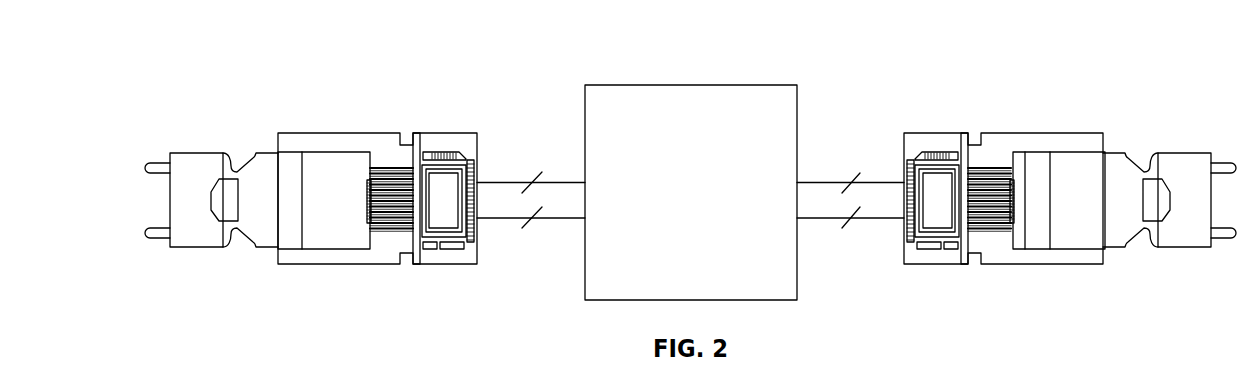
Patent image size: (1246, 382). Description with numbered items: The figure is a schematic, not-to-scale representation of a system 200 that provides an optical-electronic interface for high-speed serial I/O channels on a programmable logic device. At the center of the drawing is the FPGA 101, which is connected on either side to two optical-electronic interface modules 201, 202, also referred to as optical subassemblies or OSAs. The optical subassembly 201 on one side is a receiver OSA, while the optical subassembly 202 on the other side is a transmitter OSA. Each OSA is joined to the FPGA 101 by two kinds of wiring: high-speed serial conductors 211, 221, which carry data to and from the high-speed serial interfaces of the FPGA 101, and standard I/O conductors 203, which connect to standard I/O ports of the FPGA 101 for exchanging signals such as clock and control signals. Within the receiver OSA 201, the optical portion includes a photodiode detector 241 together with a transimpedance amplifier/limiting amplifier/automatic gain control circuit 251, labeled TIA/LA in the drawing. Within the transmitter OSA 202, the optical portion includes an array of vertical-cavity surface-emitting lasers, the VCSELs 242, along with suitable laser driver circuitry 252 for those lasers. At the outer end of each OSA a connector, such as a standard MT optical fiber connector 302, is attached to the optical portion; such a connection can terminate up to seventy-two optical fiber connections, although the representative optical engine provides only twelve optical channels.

The system 200 is at (190, 62).
The FPGA 101 is at (645, 84).
The optical-electronic interface module 201 is at (377, 200).
The optical-electronic interface module 202 is at (1007, 198).
The high-speed serial conductor 211 is at (548, 182).
The high-speed serial conductor 221 is at (873, 182).
The standard I/O conductor 203 is at (542, 218).
The photodiode detector 241 is at (285, 240).
The transimpedance amplifier/limiting amplifier/automatic gain control 251 is at (333, 240).
The VCSEL 242 is at (1080, 240).
The laser driver circuitry 252 is at (1033, 238).
The MT optical fiber connector 302 is at (195, 250).